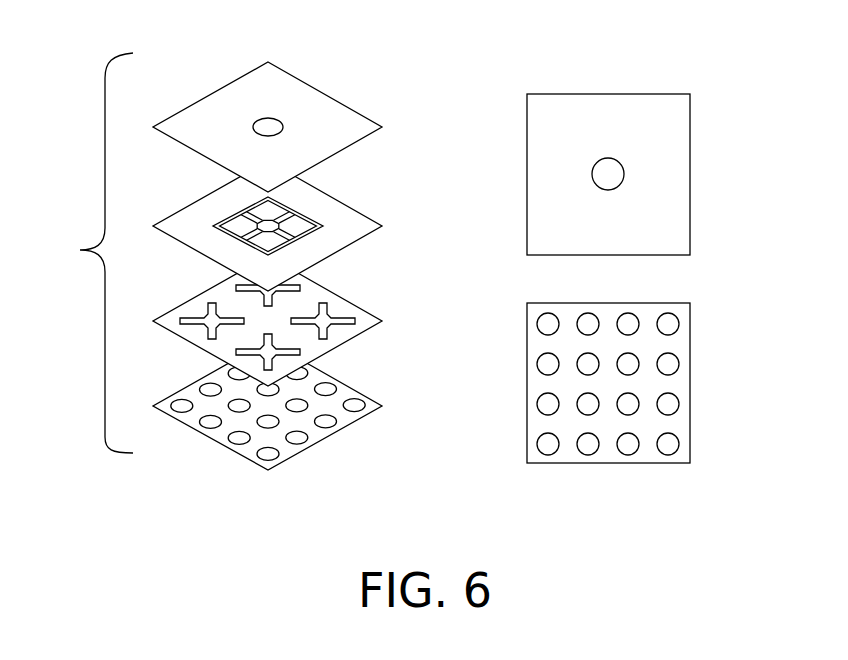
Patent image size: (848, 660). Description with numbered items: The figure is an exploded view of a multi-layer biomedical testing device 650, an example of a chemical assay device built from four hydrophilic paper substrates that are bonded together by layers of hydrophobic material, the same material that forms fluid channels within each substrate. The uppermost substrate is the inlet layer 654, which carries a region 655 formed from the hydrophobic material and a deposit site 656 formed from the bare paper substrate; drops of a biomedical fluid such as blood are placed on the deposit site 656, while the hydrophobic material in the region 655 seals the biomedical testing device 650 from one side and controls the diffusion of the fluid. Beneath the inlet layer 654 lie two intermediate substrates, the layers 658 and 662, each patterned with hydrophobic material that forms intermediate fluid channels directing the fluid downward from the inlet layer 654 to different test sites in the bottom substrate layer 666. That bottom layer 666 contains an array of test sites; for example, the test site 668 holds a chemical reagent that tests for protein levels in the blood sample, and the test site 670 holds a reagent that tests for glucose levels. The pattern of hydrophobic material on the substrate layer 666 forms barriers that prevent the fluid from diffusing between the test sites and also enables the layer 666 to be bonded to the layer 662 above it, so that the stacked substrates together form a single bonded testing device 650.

The multi-layer biomedical testing device 650 is at (78, 250).
The inlet layer 654 is at (370, 135).
The region of hydrophobic material 655 is at (232, 112).
The deposit site 656 is at (270, 122).
The substrate layer 658 is at (370, 233).
The substrate layer 662 is at (370, 328).
The substrate layer 666 is at (370, 415).
The test site 668 is at (240, 440).
The test site 670 is at (327, 422).